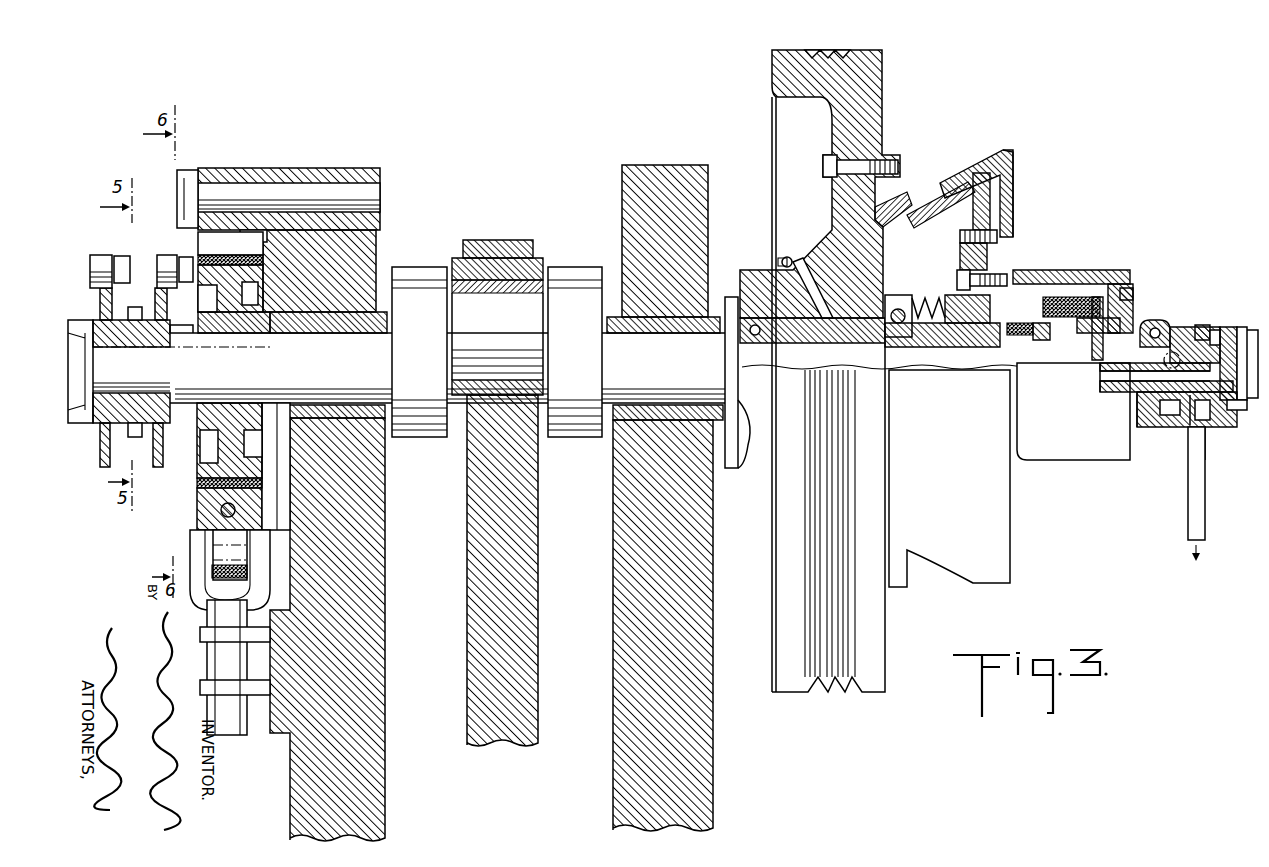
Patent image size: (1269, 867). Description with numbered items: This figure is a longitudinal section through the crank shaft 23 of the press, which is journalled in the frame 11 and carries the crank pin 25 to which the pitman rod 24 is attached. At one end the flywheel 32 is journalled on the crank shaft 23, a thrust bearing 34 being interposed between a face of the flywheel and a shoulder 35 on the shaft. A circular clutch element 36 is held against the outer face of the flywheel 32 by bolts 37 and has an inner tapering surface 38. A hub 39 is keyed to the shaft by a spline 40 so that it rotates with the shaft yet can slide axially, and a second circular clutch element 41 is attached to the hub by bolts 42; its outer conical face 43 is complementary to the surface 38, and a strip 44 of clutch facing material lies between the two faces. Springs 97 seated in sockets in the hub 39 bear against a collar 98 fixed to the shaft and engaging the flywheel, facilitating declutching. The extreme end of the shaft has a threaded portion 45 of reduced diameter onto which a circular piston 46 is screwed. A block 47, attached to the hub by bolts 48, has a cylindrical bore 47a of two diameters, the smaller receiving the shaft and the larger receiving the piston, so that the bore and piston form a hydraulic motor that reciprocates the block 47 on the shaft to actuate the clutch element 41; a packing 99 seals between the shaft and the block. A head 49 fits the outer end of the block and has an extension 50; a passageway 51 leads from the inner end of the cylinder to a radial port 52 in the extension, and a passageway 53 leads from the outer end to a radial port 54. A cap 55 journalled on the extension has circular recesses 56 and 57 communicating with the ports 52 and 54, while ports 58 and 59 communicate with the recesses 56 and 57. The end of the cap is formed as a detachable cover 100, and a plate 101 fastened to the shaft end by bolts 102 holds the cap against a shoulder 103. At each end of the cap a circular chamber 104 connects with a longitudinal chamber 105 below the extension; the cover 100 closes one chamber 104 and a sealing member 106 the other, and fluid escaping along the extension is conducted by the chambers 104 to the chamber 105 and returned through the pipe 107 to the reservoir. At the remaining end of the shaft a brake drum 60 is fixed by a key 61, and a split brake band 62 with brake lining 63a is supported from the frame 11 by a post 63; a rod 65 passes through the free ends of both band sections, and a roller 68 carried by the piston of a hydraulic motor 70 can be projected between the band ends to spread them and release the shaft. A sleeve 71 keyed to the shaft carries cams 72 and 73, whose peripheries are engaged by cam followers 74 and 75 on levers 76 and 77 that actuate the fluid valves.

The frame 11 is at (345, 172).
The crank shaft 23 is at (658, 373).
The pitman rod 24 is at (478, 585).
The crank pin 25 is at (485, 305).
The flywheel 32 is at (860, 100).
The thrust bearing 34 is at (740, 315).
The shoulder 35 is at (746, 435).
The circular clutch element 36 is at (963, 163).
The bolts 37 is at (845, 163).
The inner tapering surface 38 is at (917, 212).
The hub 39 is at (975, 330).
The spline 40 is at (955, 330).
The circular clutch element 41 is at (1000, 193).
The bolts 42 is at (1010, 243).
The outer conical face 43 is at (940, 205).
The strip of clutch facing material 44 is at (990, 156).
The threaded portion 45 is at (1105, 330).
The circular piston 46 is at (1060, 297).
The block 47 is at (1046, 462).
The cylindrical bore 47a is at (1038, 340).
The bolts 48 is at (960, 284).
The head 49 is at (1112, 284).
The extension 50 is at (1201, 340).
The passageway 51 is at (1045, 273).
The radial port 52 is at (1172, 335).
The passageway 53 is at (1105, 380).
The radial port 54 is at (1195, 405).
The cap 55 is at (1226, 340).
The circular recess 56 is at (1190, 400).
The circular recess 57 is at (1205, 415).
The port 58 is at (1182, 350).
The port 59 is at (1215, 330).
The brake drum 60 is at (200, 470).
The key 61 is at (206, 336).
The split brake band 62 is at (253, 243).
The post 63 is at (232, 183).
The brake lining 63a is at (200, 486).
The rod 65 is at (233, 512).
The roller 68 is at (215, 550).
The hydraulic motor 70 is at (231, 720).
The sleeve 71 is at (125, 408).
The cam 72 is at (100, 303).
The cam 73 is at (160, 302).
The cam follower 74 is at (96, 262).
The cam follower 75 is at (162, 262).
The lever 76 is at (122, 258).
The lever 77 is at (186, 260).
The springs 97 is at (932, 340).
The collar 98 is at (903, 300).
The packing 99 is at (1010, 336).
The detachable cover 100 is at (1240, 410).
The plate 101 is at (1238, 350).
The bolts 102 is at (1228, 420).
The shoulder 103 is at (1120, 395).
The circular chamber 104 is at (1145, 420).
The longitudinal chamber 105 is at (1203, 460).
The sealing member 106 is at (1143, 407).
The pipe 107 is at (1188, 520).